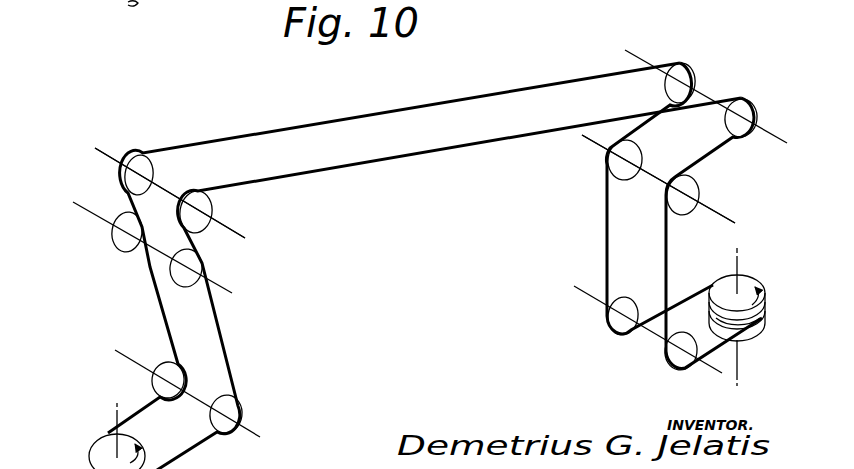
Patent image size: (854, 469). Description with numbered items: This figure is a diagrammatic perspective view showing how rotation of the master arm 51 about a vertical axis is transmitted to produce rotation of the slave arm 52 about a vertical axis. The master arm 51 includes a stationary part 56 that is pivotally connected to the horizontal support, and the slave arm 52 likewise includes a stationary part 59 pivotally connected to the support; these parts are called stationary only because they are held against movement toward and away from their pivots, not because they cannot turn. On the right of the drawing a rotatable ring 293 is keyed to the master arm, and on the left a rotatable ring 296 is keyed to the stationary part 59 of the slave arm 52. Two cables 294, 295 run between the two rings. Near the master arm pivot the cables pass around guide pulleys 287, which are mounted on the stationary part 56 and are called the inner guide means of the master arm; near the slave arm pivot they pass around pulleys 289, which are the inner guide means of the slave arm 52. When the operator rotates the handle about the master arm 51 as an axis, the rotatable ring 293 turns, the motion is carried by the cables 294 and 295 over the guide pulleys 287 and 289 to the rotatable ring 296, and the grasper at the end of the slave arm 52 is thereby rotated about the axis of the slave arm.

The master arm 51 is at (572, 310).
The slave arm 52 is at (329, 321).
The stationary part of the master arm 56 is at (597, 248).
The stationary part of the slave arm 59 is at (275, 294).
The guide pulleys 287 is at (667, 89).
The pulleys 289 is at (124, 177).
The rotatable ring 293 is at (741, 292).
The cable 294 is at (227, 352).
The cable 295 is at (167, 321).
The rotatable ring 296 is at (105, 448).